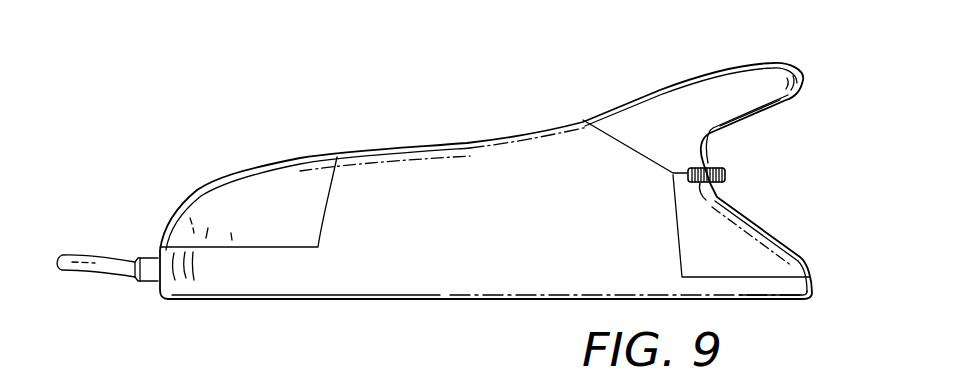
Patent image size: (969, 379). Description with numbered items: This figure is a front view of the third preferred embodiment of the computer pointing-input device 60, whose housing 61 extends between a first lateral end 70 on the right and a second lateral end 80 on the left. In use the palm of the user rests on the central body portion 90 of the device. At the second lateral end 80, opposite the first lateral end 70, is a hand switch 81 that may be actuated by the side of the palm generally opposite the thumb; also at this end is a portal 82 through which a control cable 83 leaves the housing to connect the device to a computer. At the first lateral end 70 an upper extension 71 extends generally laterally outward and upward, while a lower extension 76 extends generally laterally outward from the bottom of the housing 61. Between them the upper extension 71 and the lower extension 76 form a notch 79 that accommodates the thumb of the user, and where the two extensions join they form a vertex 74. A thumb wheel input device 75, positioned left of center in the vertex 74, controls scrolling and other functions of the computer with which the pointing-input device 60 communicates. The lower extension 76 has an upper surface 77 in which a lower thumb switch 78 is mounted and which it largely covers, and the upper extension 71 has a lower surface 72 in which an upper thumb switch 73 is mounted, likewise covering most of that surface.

The computer pointing-input device 60 is at (353, 124).
The housing 61 is at (445, 278).
The first lateral end 70 is at (757, 313).
The upper extension 71 is at (642, 103).
The lower surface 72 is at (798, 73).
The upper thumb switch 73 is at (733, 127).
The vertex 74 is at (718, 197).
The thumb wheel input device 75 is at (728, 172).
The lower extension 76 is at (790, 300).
The upper surface 77 is at (807, 288).
The lower thumb switch 78 is at (772, 232).
The notch 79 is at (797, 113).
The second lateral end 80 is at (250, 297).
The hand switch 81 is at (200, 208).
The portal 82 is at (147, 260).
The control cable 83 is at (120, 278).
The central body portion 90 is at (482, 233).